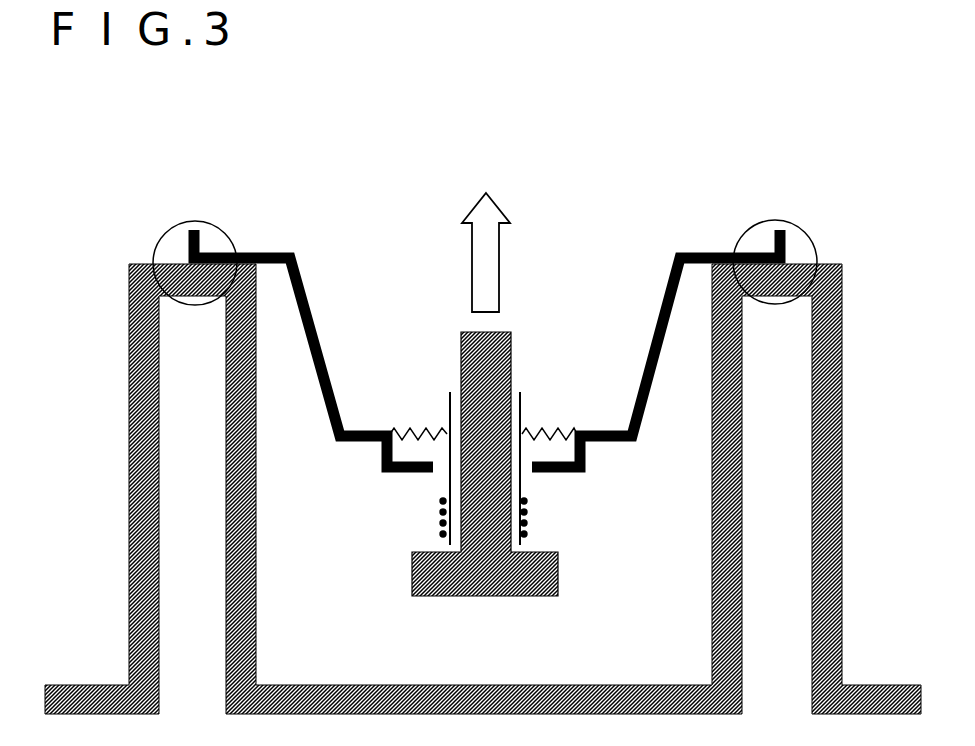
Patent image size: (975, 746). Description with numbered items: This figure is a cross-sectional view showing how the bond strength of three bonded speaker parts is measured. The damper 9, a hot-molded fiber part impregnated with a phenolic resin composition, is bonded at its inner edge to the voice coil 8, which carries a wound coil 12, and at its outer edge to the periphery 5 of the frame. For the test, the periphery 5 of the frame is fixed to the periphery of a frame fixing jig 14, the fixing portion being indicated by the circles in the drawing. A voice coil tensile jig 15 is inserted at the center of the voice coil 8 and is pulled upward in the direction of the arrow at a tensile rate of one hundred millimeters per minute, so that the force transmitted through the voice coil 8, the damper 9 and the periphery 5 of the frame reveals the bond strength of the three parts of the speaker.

The periphery of the frame 5 is at (718, 255).
The voice coil 8 is at (448, 417).
The damper 9 is at (550, 430).
The coil 12 is at (528, 523).
The frame fixing jig 14 is at (383, 692).
The voice coil tensile jig 15 is at (495, 595).